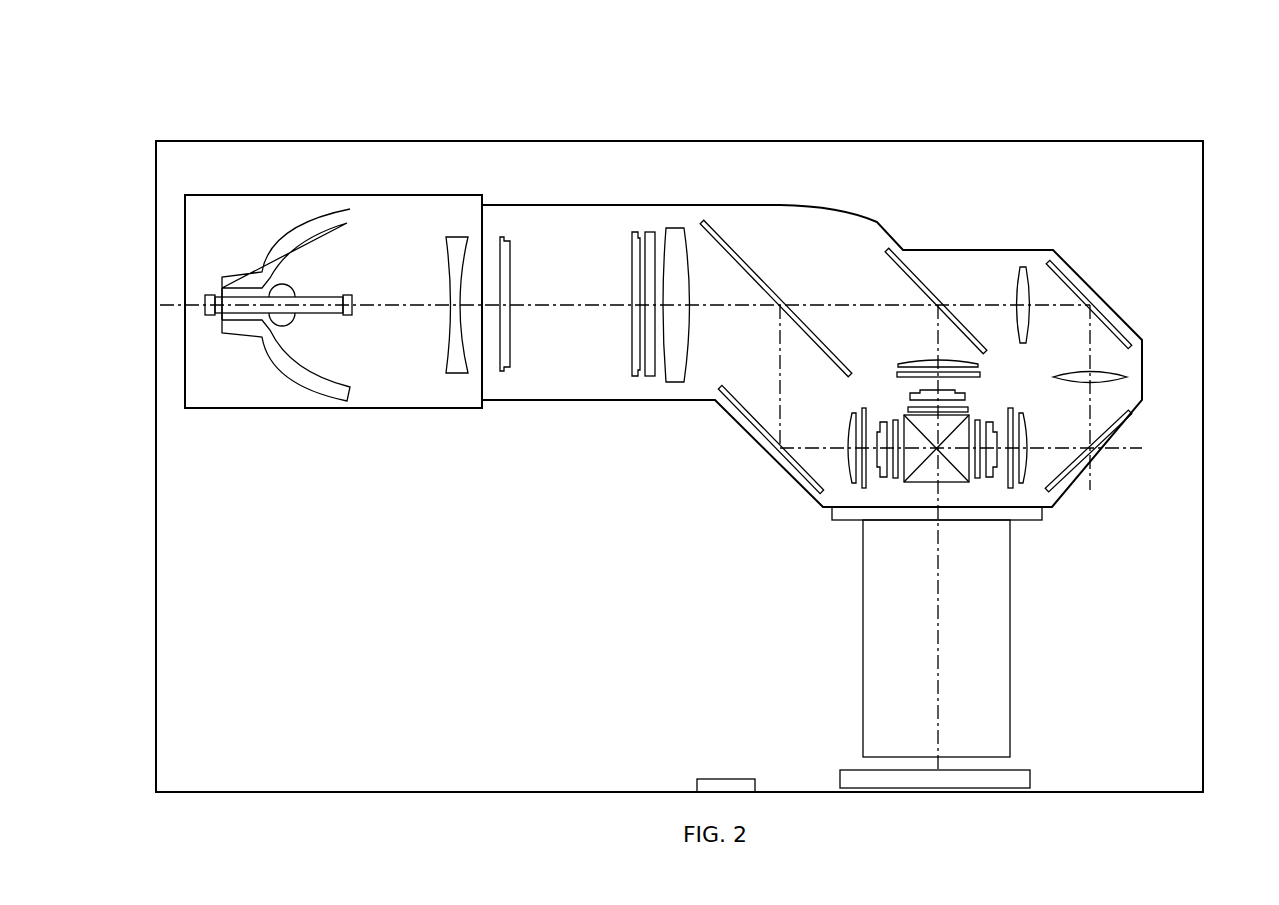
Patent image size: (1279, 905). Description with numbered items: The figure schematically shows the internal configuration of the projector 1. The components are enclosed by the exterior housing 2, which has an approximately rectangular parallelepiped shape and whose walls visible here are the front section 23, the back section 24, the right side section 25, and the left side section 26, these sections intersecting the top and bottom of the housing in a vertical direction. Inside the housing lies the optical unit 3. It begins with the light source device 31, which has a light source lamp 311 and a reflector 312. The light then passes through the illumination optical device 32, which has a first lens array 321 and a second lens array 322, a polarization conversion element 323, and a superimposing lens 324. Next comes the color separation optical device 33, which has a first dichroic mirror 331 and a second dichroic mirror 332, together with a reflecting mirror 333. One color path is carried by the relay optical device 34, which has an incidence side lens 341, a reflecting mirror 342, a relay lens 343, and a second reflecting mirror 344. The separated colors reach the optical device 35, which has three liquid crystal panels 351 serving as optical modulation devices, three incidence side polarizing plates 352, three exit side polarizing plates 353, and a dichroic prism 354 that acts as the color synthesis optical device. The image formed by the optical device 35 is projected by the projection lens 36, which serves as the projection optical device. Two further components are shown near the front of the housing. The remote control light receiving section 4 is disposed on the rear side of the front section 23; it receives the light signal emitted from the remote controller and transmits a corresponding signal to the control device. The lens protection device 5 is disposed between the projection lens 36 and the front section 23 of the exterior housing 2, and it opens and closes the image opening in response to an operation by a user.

The projector 1 is at (230, 122).
The exterior housing 2 is at (958, 141).
The front section 23 is at (585, 793).
The back section 24 is at (657, 141).
The right side section 25 is at (1203, 510).
The left side section 26 is at (156, 512).
The optical unit 3 is at (494, 512).
The light source device 31 is at (383, 100).
The light source lamp 311 is at (336, 297).
The reflector 312 is at (286, 249).
The illumination optical device 32 is at (502, 452).
The lens array 321 is at (513, 370).
The lens array 322 is at (632, 355).
The polarization conversion element 323 is at (650, 372).
The superimposing lens 324 is at (680, 360).
The color separation optical device 33 is at (825, 252).
The dichroic mirror 331 is at (738, 260).
The dichroic mirror 332 is at (935, 262).
The reflecting mirror 333 is at (795, 462).
The relay optical device 34 is at (1152, 312).
The incidence side lens 341 is at (1023, 265).
The reflecting mirror 342 is at (1085, 290).
The relay lens 343 is at (1120, 377).
The reflecting mirror 344 is at (1118, 430).
The optical device 35 is at (899, 333).
The liquid crystal panel 351 is at (912, 394).
The incidence side polarizing plate 352 is at (978, 373).
The exit side polarizing plate 353 is at (978, 410).
The dichroic prism 354 is at (925, 480).
The projection lens 36 is at (995, 640).
The remote control light receiving section 4 is at (727, 779).
The lens protection device 5 is at (1031, 783).